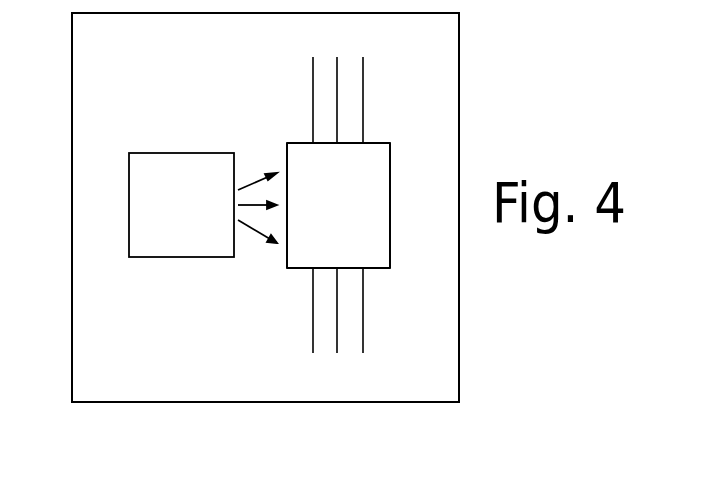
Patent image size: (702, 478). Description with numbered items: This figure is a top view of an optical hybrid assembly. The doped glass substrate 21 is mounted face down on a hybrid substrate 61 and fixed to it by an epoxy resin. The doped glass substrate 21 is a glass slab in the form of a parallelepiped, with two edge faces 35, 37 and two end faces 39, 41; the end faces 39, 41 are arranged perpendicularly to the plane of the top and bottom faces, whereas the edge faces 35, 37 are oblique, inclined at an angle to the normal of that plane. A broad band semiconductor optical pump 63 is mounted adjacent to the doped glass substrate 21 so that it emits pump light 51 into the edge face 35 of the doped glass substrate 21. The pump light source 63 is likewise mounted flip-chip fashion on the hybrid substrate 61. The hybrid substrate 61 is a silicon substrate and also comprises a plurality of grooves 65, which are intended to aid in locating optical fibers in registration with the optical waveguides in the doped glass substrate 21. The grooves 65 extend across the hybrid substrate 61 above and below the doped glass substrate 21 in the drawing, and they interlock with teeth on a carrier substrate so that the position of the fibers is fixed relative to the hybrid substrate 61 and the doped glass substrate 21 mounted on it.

The doped glass substrate 21 is at (298, 135).
The edge face 35 is at (288, 254).
The edge face 37 is at (388, 177).
The end face 39 is at (378, 142).
The end face 41 is at (377, 270).
The pump light 51 is at (262, 180).
The hybrid substrate 61 is at (72, 372).
The broad band semiconductor optical pump 63 is at (129, 218).
The grooves 65 is at (363, 347).